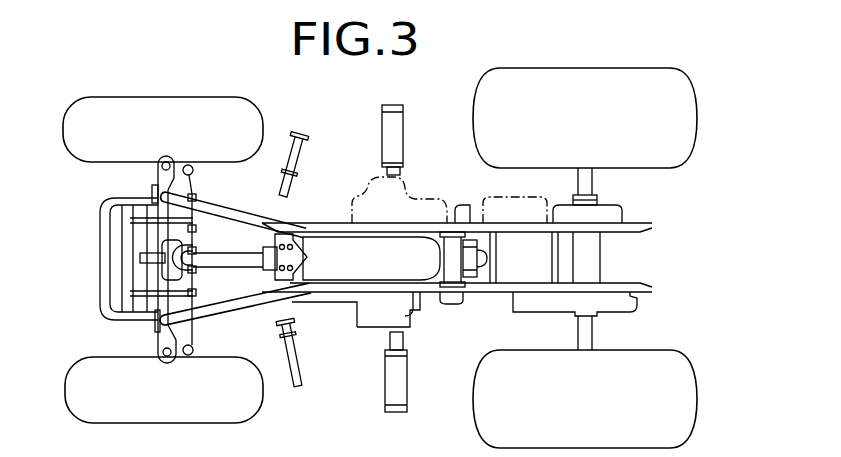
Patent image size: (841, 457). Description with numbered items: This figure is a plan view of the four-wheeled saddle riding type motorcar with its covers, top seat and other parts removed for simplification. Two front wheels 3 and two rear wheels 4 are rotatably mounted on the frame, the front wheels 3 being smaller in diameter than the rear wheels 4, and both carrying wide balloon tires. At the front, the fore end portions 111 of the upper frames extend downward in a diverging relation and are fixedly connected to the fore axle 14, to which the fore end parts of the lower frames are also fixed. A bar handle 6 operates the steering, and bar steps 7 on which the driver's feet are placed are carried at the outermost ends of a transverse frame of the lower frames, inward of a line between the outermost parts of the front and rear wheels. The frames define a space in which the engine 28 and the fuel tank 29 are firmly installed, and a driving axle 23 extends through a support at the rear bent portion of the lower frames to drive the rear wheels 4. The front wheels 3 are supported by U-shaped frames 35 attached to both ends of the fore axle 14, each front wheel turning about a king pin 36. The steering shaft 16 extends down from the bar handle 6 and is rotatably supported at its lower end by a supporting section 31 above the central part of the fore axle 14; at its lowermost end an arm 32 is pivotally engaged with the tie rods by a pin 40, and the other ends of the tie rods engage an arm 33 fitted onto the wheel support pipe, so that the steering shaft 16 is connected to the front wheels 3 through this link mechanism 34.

The front wheel 3 is at (250, 410).
The rear wheel 4 is at (673, 433).
The bar handle 6 is at (307, 152).
The bar step 7 is at (404, 135).
The fore axle 14 is at (153, 192).
The steering shaft 16 is at (233, 260).
The driving axle 23 is at (593, 184).
The engine 28 is at (318, 275).
The fuel tank 29 is at (508, 270).
The supporting section 31 is at (163, 253).
The arm 32 is at (184, 248).
The arm 33 is at (193, 168).
The link mechanism 34 is at (196, 196).
The U-shaped frame 35 is at (158, 357).
The king pin 36 is at (158, 352).
The pin 40 is at (197, 247).
The fore end portion 111 is at (247, 217).